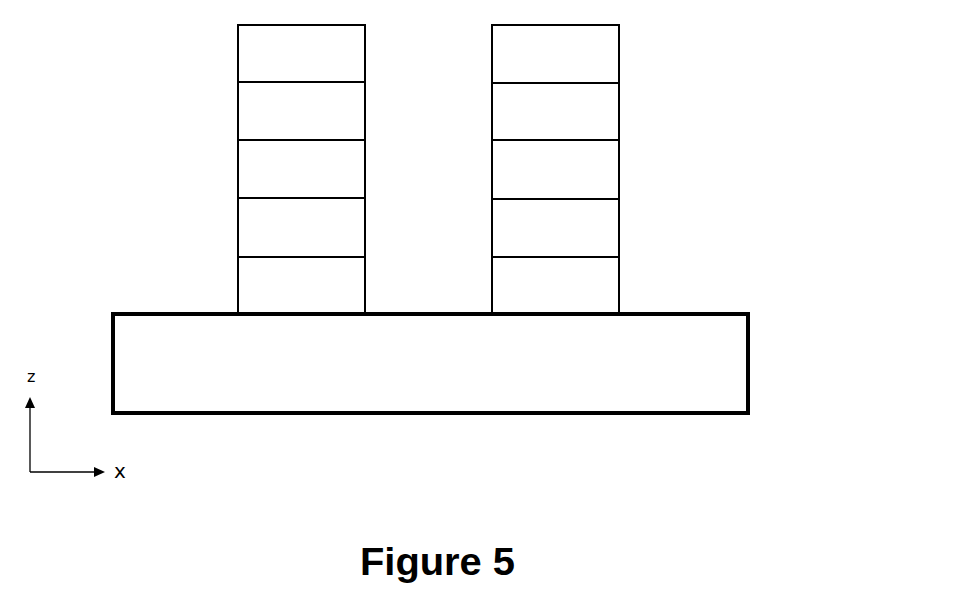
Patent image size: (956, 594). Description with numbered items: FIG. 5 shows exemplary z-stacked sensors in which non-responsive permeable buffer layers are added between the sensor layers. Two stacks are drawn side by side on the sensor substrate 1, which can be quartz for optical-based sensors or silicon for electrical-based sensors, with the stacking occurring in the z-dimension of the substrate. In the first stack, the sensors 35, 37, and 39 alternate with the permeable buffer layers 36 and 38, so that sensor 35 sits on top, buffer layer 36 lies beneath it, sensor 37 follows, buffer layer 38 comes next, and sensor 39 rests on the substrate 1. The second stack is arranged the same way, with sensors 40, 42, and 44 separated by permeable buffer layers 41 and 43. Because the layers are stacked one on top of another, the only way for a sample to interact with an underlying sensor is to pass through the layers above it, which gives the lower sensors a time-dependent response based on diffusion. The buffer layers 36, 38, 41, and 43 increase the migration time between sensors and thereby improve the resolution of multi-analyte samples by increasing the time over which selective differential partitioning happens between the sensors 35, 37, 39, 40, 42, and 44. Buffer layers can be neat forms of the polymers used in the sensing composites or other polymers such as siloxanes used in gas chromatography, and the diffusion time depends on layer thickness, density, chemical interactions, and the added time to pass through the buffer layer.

The sensor substrate 1 is at (750, 367).
The sensor 35 is at (301, 53).
The permeable buffer layer 36 is at (301, 111).
The sensor 37 is at (301, 169).
The permeable buffer layer 38 is at (301, 227).
The sensor 39 is at (301, 285).
The sensor 40 is at (555, 54).
The permeable buffer layer 41 is at (555, 111).
The sensor 42 is at (555, 169).
The permeable buffer layer 43 is at (555, 228).
The sensor 44 is at (555, 285).